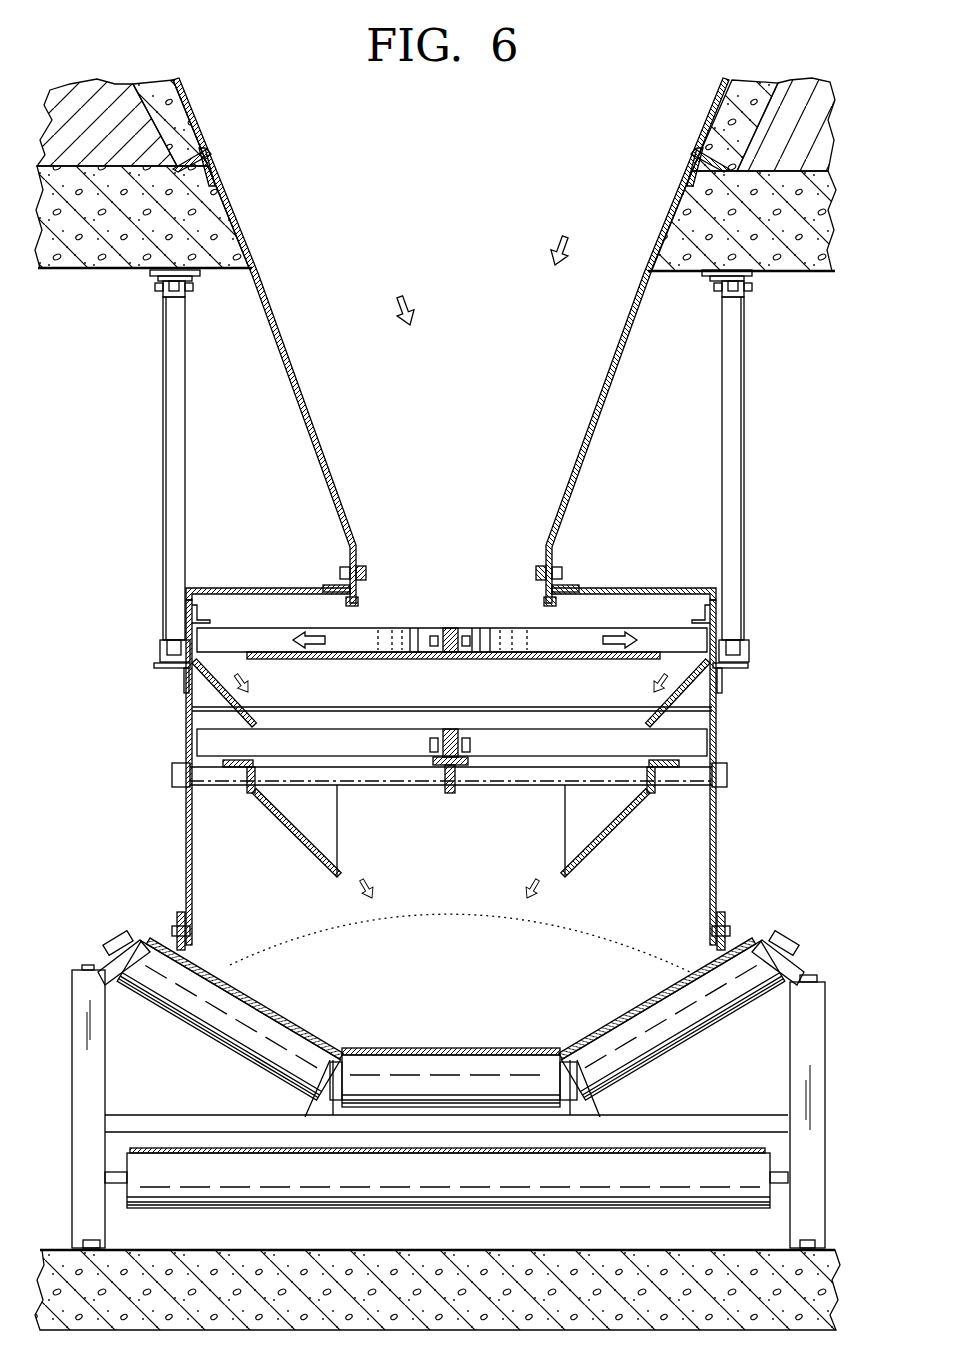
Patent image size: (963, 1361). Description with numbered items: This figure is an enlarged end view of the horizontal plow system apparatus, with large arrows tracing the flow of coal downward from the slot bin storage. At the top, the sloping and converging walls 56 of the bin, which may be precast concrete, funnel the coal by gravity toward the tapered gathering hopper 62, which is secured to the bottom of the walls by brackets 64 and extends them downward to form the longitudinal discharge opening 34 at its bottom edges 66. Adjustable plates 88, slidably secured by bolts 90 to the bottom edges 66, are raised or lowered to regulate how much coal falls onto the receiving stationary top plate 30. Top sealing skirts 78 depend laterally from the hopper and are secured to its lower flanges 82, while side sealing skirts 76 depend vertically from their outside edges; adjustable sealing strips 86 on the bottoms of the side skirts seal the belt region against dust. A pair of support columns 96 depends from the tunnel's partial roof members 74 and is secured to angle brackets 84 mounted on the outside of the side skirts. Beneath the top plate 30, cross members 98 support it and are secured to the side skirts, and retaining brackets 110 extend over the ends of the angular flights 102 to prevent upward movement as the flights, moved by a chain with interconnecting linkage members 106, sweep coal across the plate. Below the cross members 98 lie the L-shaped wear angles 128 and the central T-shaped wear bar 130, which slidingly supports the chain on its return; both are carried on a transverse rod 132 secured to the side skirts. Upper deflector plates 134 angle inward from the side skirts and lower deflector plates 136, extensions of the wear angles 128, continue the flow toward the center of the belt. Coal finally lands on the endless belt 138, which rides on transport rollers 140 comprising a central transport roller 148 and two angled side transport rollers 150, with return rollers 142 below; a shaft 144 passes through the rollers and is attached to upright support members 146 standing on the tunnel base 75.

The receiving stationary top plate 30 is at (534, 660).
The longitudinal discharge opening 34 is at (451, 576).
The sloping and converging walls 56 is at (178, 108).
The tapered gathering hopper 62 is at (302, 377).
The brackets 64 is at (212, 162).
The bottom edges 66 is at (346, 602).
The partial roof members 74 is at (220, 236).
The base 75 is at (818, 1292).
The side sealing skirts 76 is at (185, 816).
The top sealing skirts 78 is at (240, 588).
The lower flanges 82 is at (332, 584).
The angle brackets 84 is at (170, 670).
The adjustable sealing strips 86 is at (172, 920).
The adjustable plates 88 is at (360, 598).
The bolts 90 is at (354, 565).
The support columns 96 is at (166, 400).
The cross members 98 is at (469, 702).
The angular flights 102 is at (347, 645).
The interconnecting linkage members 106 is at (462, 630).
The retaining brackets 110 is at (206, 618).
The wear angles 128 is at (235, 770).
The wear bar 130 is at (440, 770).
The rod 132 is at (686, 785).
The upper deflector plates 134 is at (240, 702).
The lower deflector plates 136 is at (300, 845).
The endless belt 138 is at (272, 1012).
The transport rollers 140 is at (772, 1010).
The return rollers 142 is at (690, 1195).
The shaft 144 is at (112, 935).
The upright support members 146 is at (96, 1030).
The central transport roller 148 is at (453, 1062).
The side transport rollers 150 is at (255, 1062).